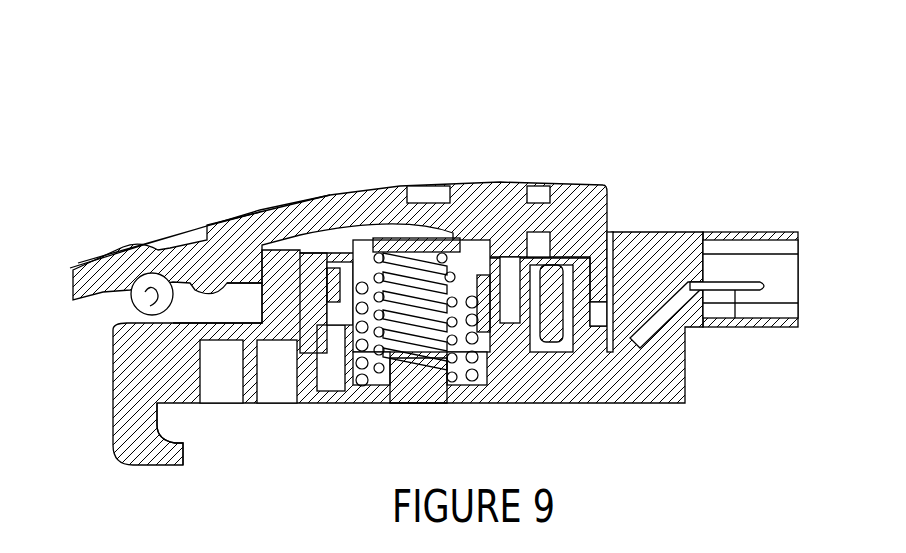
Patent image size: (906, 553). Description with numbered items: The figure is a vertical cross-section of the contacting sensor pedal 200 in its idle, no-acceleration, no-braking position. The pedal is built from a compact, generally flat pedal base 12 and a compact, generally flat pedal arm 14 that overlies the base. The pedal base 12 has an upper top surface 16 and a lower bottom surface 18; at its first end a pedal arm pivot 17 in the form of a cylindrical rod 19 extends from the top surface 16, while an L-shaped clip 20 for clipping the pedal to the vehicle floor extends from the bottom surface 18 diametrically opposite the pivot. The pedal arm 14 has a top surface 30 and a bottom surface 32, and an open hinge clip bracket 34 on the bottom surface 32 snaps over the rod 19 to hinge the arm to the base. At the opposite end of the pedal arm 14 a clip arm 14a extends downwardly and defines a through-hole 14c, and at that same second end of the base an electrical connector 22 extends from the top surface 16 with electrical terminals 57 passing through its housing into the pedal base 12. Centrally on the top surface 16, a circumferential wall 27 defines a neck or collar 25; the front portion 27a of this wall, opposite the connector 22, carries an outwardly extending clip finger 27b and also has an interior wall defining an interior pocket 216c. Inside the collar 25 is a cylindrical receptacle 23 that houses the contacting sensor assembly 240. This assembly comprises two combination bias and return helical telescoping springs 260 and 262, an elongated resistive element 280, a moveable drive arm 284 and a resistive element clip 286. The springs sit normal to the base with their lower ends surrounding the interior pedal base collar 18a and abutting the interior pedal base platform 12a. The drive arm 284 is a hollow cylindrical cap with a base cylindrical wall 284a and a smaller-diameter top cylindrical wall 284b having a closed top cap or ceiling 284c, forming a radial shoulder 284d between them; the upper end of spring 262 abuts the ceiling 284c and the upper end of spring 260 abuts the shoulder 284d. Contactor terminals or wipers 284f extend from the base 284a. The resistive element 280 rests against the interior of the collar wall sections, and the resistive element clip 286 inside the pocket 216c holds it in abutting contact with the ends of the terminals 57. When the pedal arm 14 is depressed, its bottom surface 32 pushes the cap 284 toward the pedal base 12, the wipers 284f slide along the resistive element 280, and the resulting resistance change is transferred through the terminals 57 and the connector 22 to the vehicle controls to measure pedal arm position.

The contacting sensor pedal 200 is at (580, 86).
The pedal base 12 is at (379, 406).
The interior pedal base platform 12a is at (348, 405).
The pedal arm 14 is at (343, 186).
The clip arm 14a is at (618, 215).
The through-hole 14c is at (615, 232).
The top surface 16 is at (234, 322).
The pedal arm pivot 17 is at (118, 318).
The bottom surface 18 is at (333, 390).
The interior pedal base collar 18a is at (418, 372).
The rod 19 is at (127, 330).
The L-shaped clip 20 is at (163, 453).
The electrical connector 22 is at (765, 232).
The receptacle 23 is at (300, 375).
The neck or collar 25 is at (300, 263).
The circumferential wall 27 is at (262, 403).
The front portion of circumferential wall 27a is at (575, 352).
The clip finger 27b is at (650, 236).
The top surface of pedal arm 30 is at (270, 207).
The bottom surface of pedal arm 32 is at (234, 285).
The hinge clip bracket 34 is at (108, 295).
The electrical terminals 57 is at (737, 318).
The interior pocket 216c is at (552, 342).
The contacting sensor assembly 240 is at (575, 222).
The bias and return spring 260 is at (383, 228).
The bias and return spring 262 is at (460, 240).
The resistive element 280 is at (266, 360).
The drive arm 284 is at (398, 235).
The base cylindrical wall 284a is at (500, 360).
The top cylindrical wall 284b is at (482, 255).
The top cap or ceiling 284c is at (440, 238).
The radial shoulder 284d is at (520, 260).
The contactor terminals or wipers 284f is at (333, 200).
The resistive element clip 286 is at (607, 258).